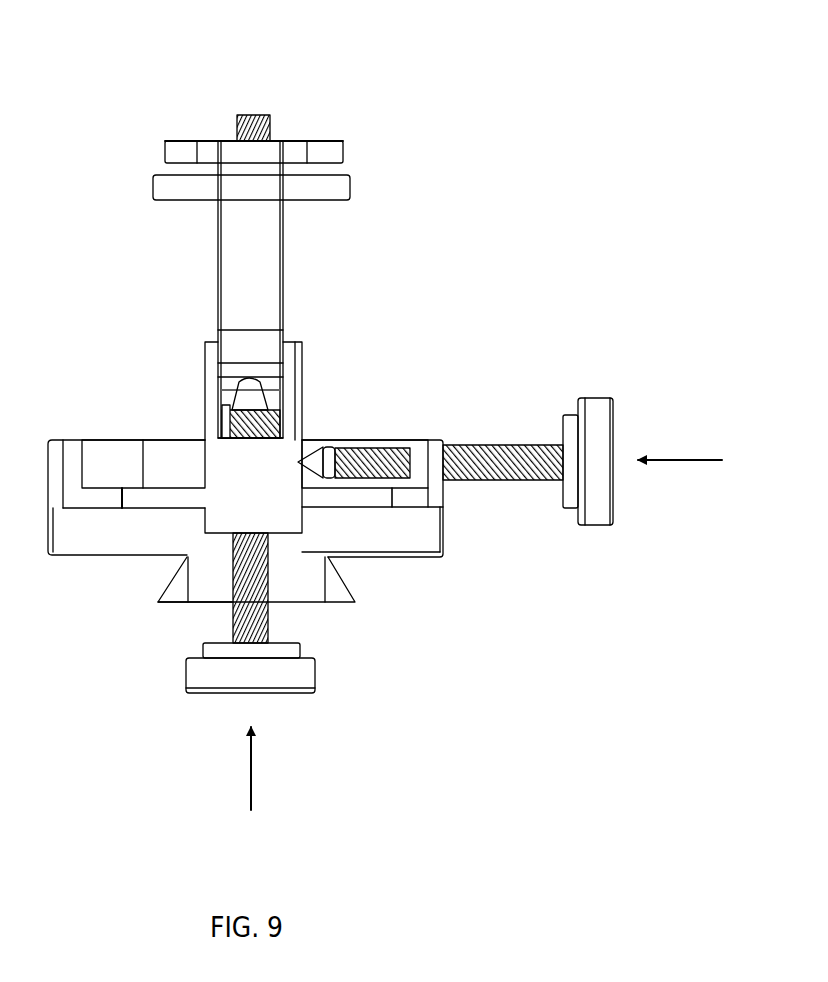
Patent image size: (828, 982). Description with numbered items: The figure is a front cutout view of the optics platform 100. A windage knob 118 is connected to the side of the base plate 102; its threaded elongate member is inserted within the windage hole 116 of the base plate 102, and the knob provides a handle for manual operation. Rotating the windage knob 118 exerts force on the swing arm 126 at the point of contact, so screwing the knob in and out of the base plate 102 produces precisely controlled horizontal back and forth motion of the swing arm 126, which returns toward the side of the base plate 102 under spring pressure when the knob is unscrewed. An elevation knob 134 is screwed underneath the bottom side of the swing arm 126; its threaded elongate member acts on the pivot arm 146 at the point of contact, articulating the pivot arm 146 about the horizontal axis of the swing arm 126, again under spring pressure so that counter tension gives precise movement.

The optics platform 100 is at (87, 85).
The pivot arm 146 is at (283, 233).
The swing arm 126 is at (205, 355).
The base plate 102 is at (93, 557).
The elevation knob 134 is at (188, 680).
The windage hole 116 is at (350, 440).
The windage knob 118 is at (613, 512).